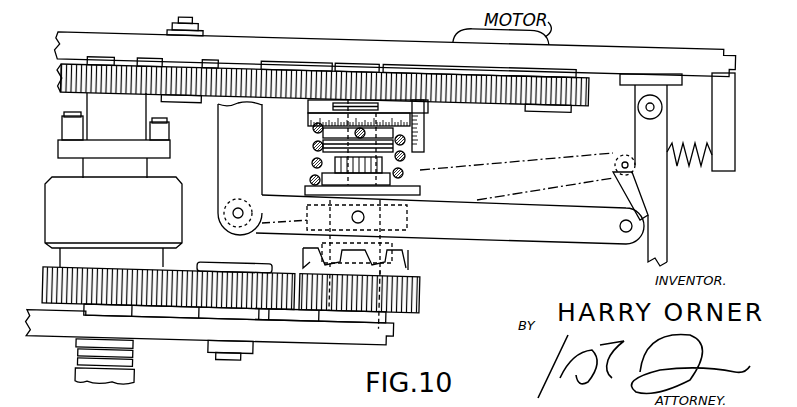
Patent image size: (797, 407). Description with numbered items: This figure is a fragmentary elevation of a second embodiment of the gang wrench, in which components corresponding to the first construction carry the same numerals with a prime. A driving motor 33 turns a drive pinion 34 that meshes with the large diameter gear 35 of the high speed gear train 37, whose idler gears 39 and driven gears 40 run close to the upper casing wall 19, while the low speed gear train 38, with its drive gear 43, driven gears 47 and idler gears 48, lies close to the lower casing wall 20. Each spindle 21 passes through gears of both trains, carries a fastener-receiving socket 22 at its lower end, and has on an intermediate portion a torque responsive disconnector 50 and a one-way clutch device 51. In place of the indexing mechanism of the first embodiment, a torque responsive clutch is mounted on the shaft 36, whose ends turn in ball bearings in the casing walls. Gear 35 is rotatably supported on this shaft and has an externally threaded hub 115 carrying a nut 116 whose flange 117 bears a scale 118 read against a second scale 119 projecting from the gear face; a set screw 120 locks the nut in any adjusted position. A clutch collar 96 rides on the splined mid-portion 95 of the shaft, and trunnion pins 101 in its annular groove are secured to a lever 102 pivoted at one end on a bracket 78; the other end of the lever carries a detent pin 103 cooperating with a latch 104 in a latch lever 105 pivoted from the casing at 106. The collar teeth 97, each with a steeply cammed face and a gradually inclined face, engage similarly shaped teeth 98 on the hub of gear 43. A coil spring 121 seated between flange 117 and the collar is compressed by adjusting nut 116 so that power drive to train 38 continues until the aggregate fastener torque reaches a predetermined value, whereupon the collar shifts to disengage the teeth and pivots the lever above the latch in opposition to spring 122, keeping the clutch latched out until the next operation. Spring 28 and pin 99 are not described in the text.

The casing wall 19 is at (681, 66).
The casing wall 20 is at (313, 340).
The spindle 21 is at (87, 308).
The fastener-receiving socket 22 is at (137, 377).
The spring 28 is at (137, 353).
The driving motor 33 is at (593, 47).
The drive pinion 34 is at (588, 96).
The large diameter gear 35 is at (493, 108).
The shaft 36 is at (398, 332).
The high speed gear train 37 is at (55, 81).
The low speed gear train 38 is at (39, 279).
The idler gear 39 is at (187, 77).
The driven gear 40 is at (104, 66).
The drive gear 43 is at (420, 305).
The driven gear 47 is at (50, 262).
The idler gear 48 is at (204, 265).
The torque responsive disconnector 50 is at (50, 151).
The one-way clutch device 51 is at (39, 226).
The bracket 78 is at (222, 140).
The splined mid-portion 95 is at (422, 171).
The clutch collar 96 is at (405, 186).
The teeth 97 is at (406, 260).
The teeth 98 is at (410, 283).
The pin 99 is at (403, 222).
The trunnion pin 101 is at (408, 247).
The lever 102 is at (490, 237).
The detent pin 103 is at (624, 232).
The latch 104 is at (640, 182).
The latch lever 105 is at (660, 244).
The pivot 106 is at (655, 110).
The externally threaded hub 115 is at (359, 106).
The nut 116 is at (322, 144).
The flange 117 is at (318, 108).
The scale 118 is at (312, 122).
The second scale 119 is at (426, 121).
The set screw 120 is at (315, 165).
The coil spring 121 is at (334, 217).
The spring 122 is at (718, 138).